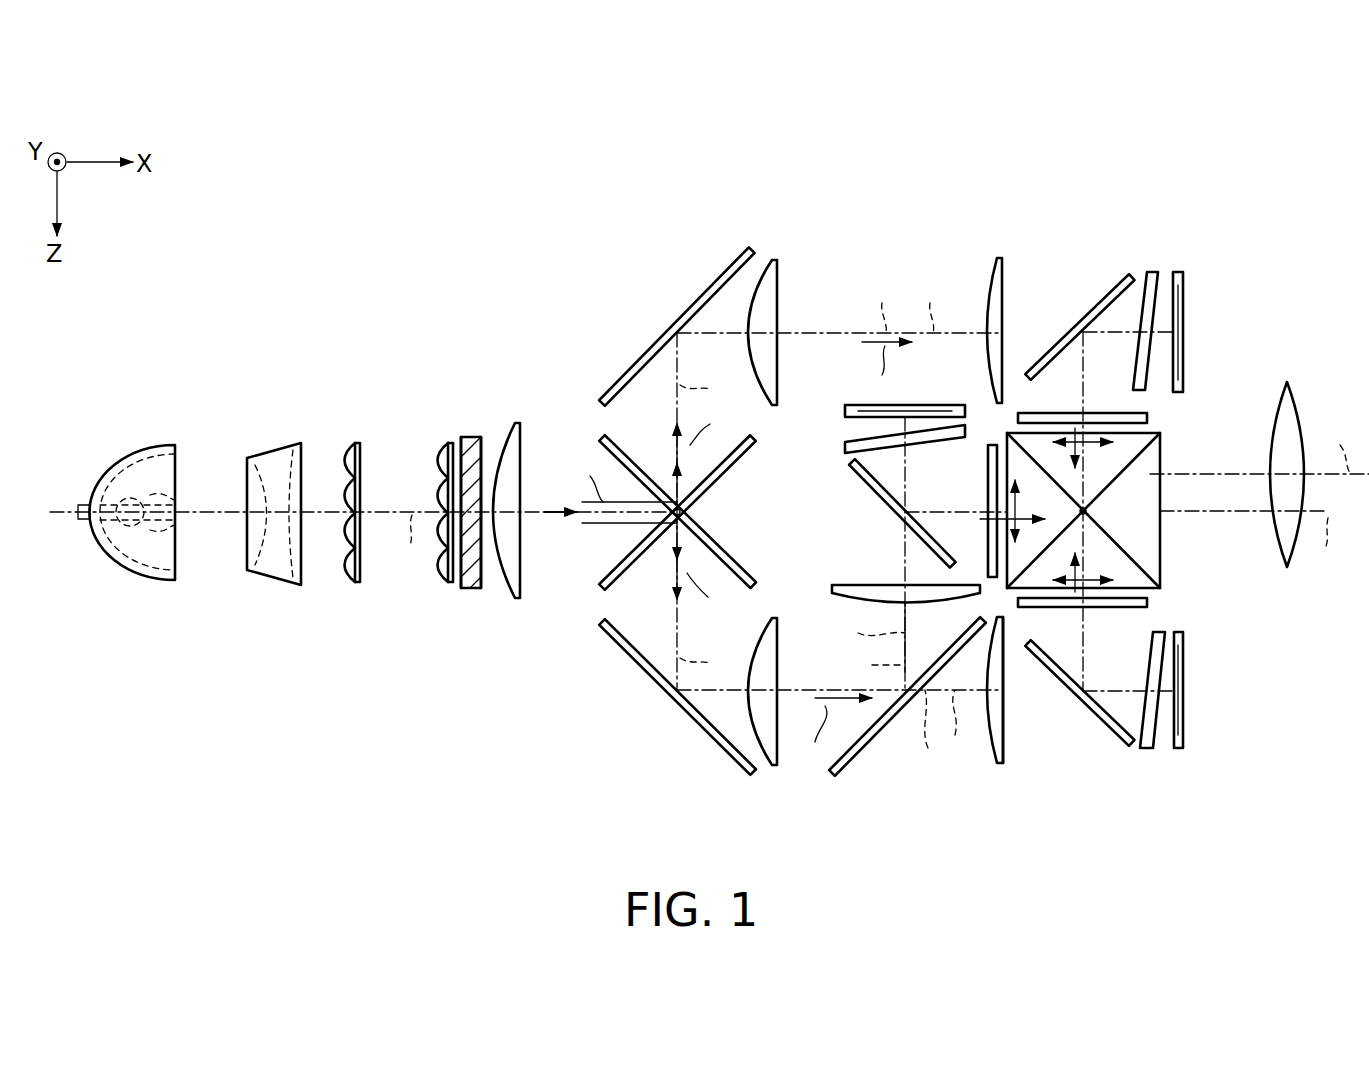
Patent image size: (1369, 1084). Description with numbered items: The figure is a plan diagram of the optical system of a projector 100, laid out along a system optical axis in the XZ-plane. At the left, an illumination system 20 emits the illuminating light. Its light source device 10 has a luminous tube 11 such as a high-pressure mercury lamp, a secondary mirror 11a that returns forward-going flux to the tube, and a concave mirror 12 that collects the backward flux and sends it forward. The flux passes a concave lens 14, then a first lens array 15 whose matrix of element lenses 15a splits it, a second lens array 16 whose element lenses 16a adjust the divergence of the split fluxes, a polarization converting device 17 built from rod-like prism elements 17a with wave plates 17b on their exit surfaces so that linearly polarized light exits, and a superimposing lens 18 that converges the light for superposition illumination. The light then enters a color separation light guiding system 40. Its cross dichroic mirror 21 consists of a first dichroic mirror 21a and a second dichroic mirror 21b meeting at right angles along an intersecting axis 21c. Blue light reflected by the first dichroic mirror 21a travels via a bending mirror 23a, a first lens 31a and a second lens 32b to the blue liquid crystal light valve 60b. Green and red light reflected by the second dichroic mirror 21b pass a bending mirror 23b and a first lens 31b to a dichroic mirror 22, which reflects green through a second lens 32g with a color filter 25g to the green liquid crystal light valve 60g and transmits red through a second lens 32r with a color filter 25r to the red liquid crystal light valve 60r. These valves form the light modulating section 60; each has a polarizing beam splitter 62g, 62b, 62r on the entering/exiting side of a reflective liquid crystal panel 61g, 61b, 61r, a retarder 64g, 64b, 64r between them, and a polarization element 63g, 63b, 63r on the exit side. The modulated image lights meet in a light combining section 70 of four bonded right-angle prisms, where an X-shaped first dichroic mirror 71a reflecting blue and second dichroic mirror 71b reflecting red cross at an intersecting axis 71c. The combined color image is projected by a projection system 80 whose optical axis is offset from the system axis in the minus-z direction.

The projector 100 is at (1160, 115).
The light source device 10 is at (92, 446).
The luminous tube 11 is at (115, 555).
The secondary mirror 11a is at (148, 540).
The concave mirror 12 is at (124, 455).
The concave lens 14 is at (262, 455).
The first lens array 15 is at (357, 443).
The element lens 15a is at (346, 458).
The second lens array 16 is at (446, 443).
The element lens 16a is at (438, 460).
The polarization converting device 17 is at (472, 437).
The prism element 17a is at (463, 590).
The wave plate 17b is at (483, 560).
The superimposing lens 18 is at (516, 423).
The illumination system 20 is at (352, 615).
The cross dichroic mirror 21 is at (563, 660).
The first dichroic mirror 21a is at (605, 590).
The second dichroic mirror 21b is at (605, 440).
The intersecting axis 21c is at (685, 512).
The dichroic mirror 22 is at (858, 750).
The bending mirror 23a is at (703, 272).
The bending mirror 23b is at (718, 752).
The color filter 25g is at (850, 585).
The color filter 25r is at (1004, 738).
The first lens 31a is at (766, 258).
The first lens 31b is at (762, 766).
The second lens 32b is at (998, 258).
The second lens 32g is at (832, 590).
The second lens 32r is at (999, 764).
The color separation light guiding system 40 is at (592, 252).
The light modulating section 60 is at (1180, 206).
The liquid crystal light valve 60g is at (985, 232).
The liquid crystal light valve 60b is at (1265, 220).
The liquid crystal light valve 60r is at (1265, 627).
The reflective liquid crystal panel 61g is at (905, 405).
The reflective liquid crystal panel 61b is at (1184, 305).
The reflective liquid crystal panel 61r is at (1184, 713).
The polarizing beam splitter 62g is at (850, 462).
The polarizing beam splitter 62b is at (1133, 275).
The polarizing beam splitter 62r is at (1133, 745).
The polarization element 63g is at (988, 445).
The polarization element 63b is at (1147, 418).
The polarization element 63r is at (1147, 603).
The retarder 64g is at (847, 443).
The retarder 64b is at (1152, 272).
The retarder 64r is at (1148, 750).
The light combining section 70 is at (1162, 540).
The first dichroic mirror 71a is at (1142, 565).
The second dichroic mirror 71b is at (1142, 455).
The intersecting axis 71c is at (1090, 509).
The projection system 80 is at (1297, 390).